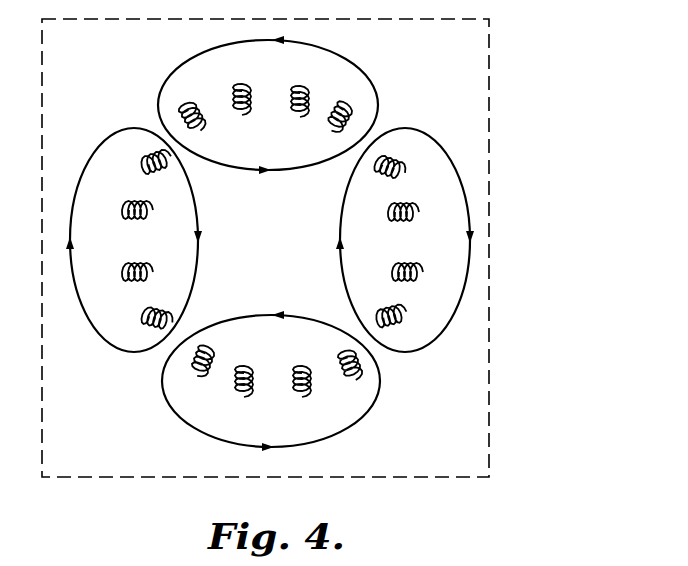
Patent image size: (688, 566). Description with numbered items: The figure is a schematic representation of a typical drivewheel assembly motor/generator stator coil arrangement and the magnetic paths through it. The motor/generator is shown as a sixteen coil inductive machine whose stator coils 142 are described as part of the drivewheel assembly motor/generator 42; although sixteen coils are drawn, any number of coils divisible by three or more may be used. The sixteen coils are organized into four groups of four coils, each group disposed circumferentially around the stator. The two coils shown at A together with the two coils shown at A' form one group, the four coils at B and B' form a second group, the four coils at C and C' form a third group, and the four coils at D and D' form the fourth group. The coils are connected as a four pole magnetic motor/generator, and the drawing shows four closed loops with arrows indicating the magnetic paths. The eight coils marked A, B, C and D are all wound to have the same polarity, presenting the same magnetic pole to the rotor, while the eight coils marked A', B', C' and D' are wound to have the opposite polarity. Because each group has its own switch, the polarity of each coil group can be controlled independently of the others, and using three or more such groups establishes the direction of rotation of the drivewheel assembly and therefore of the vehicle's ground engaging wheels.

The stator coils 142 is at (489, 101).
The motor 42 is at (354, 243).
The coil group A coils A is at (267, 244).
The coil group B coils B is at (269, 242).
The coil group C coils C is at (268, 244).
The coil group D coils D is at (271, 243).
The coil group A' coils A' is at (268, 244).
The coil group B' coils B' is at (267, 241).
The coil group C' coils C' is at (273, 244).
The coil group D' coils D' is at (275, 243).